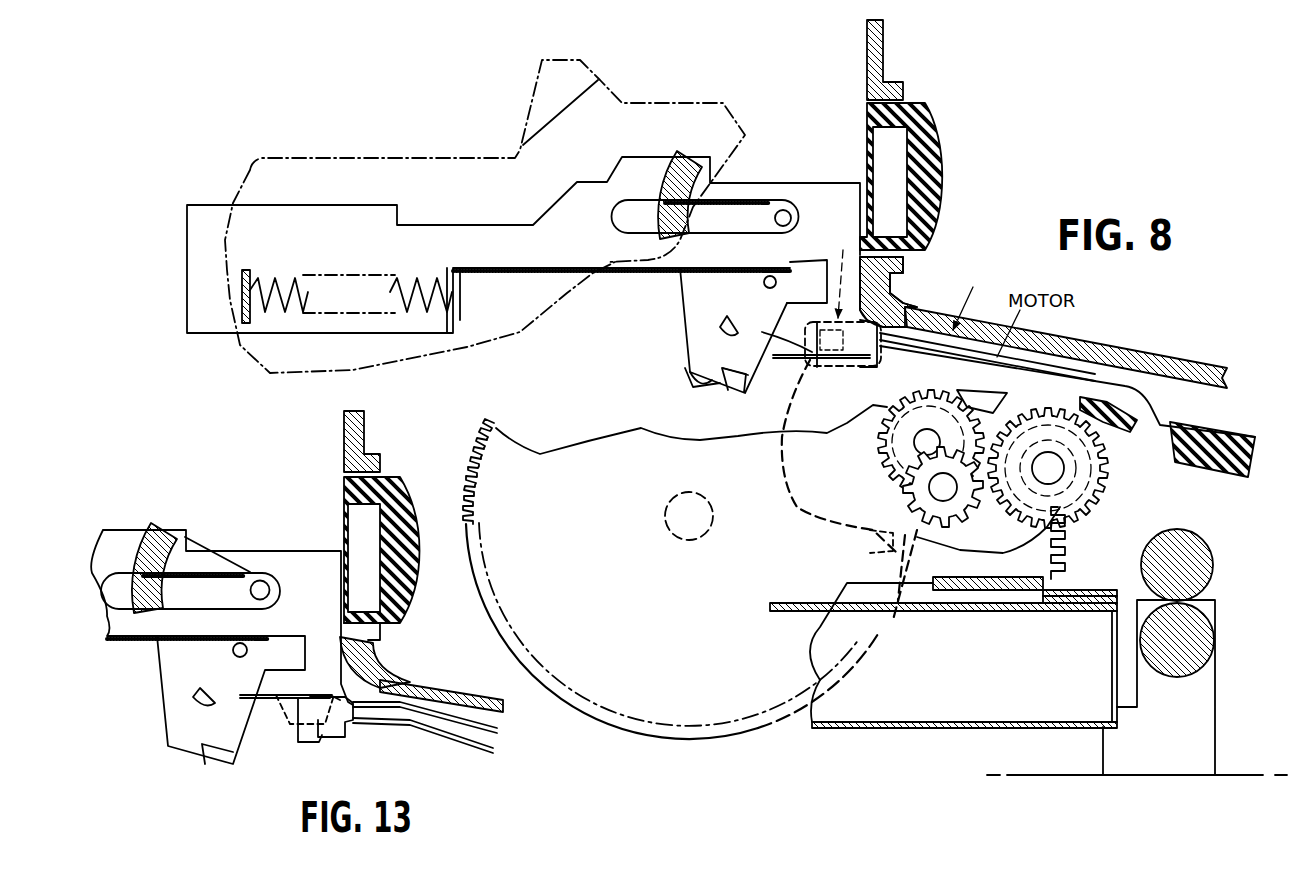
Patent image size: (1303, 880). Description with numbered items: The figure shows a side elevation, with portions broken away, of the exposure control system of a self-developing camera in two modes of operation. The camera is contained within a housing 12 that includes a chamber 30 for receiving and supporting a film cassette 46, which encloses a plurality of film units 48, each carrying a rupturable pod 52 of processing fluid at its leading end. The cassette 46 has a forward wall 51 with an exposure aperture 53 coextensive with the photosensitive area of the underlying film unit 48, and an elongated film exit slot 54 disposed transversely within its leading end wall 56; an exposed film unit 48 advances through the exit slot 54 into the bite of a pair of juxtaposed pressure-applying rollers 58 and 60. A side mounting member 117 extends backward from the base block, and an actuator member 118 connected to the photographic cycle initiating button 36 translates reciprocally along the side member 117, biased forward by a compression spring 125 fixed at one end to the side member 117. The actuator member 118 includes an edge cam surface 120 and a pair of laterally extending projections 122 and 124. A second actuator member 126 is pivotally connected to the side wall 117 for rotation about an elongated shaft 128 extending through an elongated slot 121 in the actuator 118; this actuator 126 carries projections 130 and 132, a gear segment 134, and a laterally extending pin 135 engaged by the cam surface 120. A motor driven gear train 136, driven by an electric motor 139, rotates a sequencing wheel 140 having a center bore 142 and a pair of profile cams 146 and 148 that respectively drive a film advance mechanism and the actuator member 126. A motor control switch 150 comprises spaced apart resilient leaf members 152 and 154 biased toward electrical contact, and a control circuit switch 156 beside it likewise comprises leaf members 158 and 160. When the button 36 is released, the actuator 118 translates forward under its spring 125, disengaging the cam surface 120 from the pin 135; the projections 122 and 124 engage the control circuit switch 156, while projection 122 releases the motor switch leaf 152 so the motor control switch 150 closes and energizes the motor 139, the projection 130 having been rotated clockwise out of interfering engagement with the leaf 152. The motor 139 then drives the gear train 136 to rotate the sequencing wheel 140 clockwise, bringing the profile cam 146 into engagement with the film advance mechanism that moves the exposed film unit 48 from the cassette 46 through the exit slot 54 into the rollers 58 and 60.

In FIG. 8, the housing 12 is at (883, 67).
In FIG. 13, the housing 12 is at (364, 432).
In FIG. 8, the chamber 30 is at (553, 428).
In FIG. 8, the photographic cycle initiating button 36 is at (938, 160).
In FIG. 13, the photographic cycle initiating button 36 is at (420, 505).
In FIG. 8, the film cassette 46 is at (927, 727).
In FIG. 8, the film units 48 is at (898, 608).
In FIG. 8, the forward wall 51 is at (1067, 572).
In FIG. 8, the rupturable pod 52 is at (1050, 612).
In FIG. 8, the exposure aperture 53 is at (925, 590).
In FIG. 8, the film exit slot 54 is at (1120, 600).
In FIG. 8, the leading end wall 56 is at (1118, 716).
In FIG. 8, the pressure-applying roller 58 is at (1210, 555).
In FIG. 8, the pressure-applying roller 60 is at (1215, 645).
In FIG. 8, the side mounting member 117 is at (392, 158).
In FIG. 8, the actuator member 118 is at (456, 221).
In FIG. 13, the actuator member 118 is at (328, 548).
In FIG. 8, the edge cam surface 120 is at (790, 262).
In FIG. 8, the elongated slot 121 is at (743, 195).
In FIG. 13, the elongated slot 121 is at (212, 572).
In FIG. 8, the projection 122 is at (847, 367).
In FIG. 13, the projection 122 is at (305, 700).
In FIG. 8, the projection 124 is at (870, 369).
In FIG. 13, the projection 124 is at (337, 730).
In FIG. 8, the compression spring 125 is at (407, 268).
In FIG. 8, the actuator member 126 is at (676, 310).
In FIG. 13, the actuator member 126 is at (153, 708).
In FIG. 8, the elongated shaft 128 is at (785, 210).
In FIG. 13, the elongated shaft 128 is at (268, 572).
In FIG. 8, the projection 130 is at (718, 323).
In FIG. 13, the projection 130 is at (190, 695).
In FIG. 8, the projection 132 is at (733, 388).
In FIG. 13, the projection 132 is at (195, 742).
In FIG. 8, the gear segment 134 is at (648, 212).
In FIG. 13, the gear segment 134 is at (118, 603).
In FIG. 8, the pin 135 is at (762, 280).
In FIG. 13, the pin 135 is at (248, 652).
In FIG. 8, the motor driven gear train 136 is at (1107, 447).
In FIG. 8, the motor 139 is at (1100, 350).
In FIG. 8, the sequencing wheel 140 is at (656, 737).
In FIG. 8, the center bore 142 is at (708, 503).
In FIG. 8, the profile cam 146 is at (880, 540).
In FIG. 8, the profile cam 148 is at (690, 372).
In FIG. 8, the motor control switch 150 is at (904, 276).
In FIG. 8, the leaf member 152 is at (923, 317).
In FIG. 8, the leaf member 154 is at (1033, 357).
In FIG. 13, the control circuit switch 156 is at (448, 700).
In FIG. 13, the leaf member 158 is at (383, 693).
In FIG. 13, the leaf member 160 is at (437, 748).